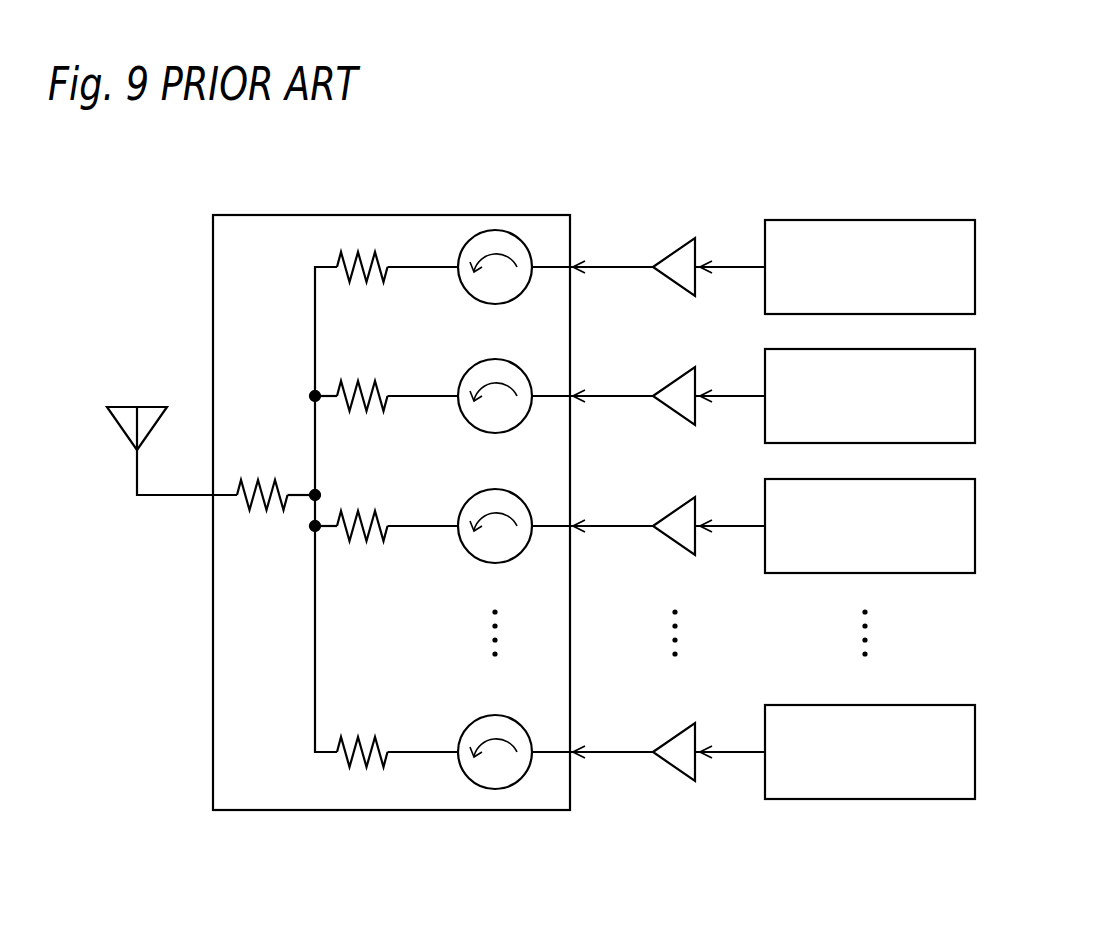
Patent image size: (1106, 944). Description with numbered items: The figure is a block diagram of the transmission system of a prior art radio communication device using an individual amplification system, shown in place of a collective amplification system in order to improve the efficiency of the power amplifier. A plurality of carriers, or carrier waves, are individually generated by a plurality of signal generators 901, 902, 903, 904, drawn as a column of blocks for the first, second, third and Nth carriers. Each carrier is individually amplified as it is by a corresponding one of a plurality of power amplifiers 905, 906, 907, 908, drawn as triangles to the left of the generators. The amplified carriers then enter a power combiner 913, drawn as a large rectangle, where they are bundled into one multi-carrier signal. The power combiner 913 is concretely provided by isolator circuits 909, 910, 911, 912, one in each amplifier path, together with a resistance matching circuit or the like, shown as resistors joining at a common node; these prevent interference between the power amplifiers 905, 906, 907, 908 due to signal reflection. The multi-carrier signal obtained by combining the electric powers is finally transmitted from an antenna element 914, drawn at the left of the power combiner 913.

The signal generator 901 is at (976, 262).
The signal generator 902 is at (976, 395).
The signal generator 903 is at (976, 525).
The signal generator 904 is at (976, 758).
The power amplifier 905 is at (670, 242).
The power amplifier 906 is at (668, 385).
The power amplifier 907 is at (672, 512).
The power amplifier 908 is at (675, 772).
The isolator circuit 909 is at (478, 232).
The isolator circuit 910 is at (470, 365).
The isolator circuit 911 is at (470, 495).
The isolator circuit 912 is at (478, 790).
The power combiner 913 is at (286, 215).
The antenna element 914 is at (125, 405).